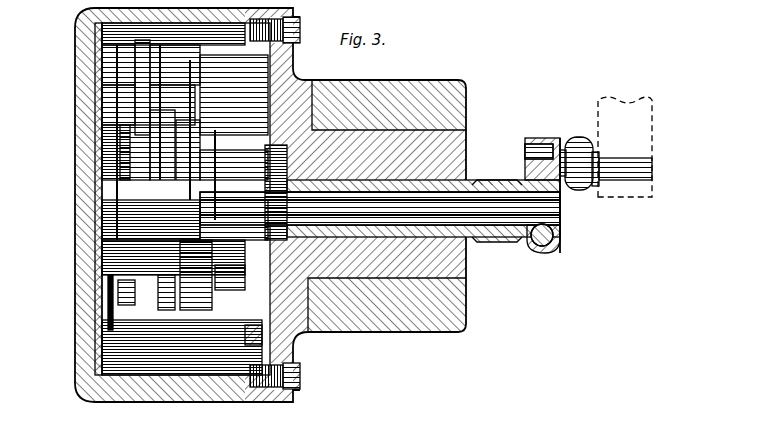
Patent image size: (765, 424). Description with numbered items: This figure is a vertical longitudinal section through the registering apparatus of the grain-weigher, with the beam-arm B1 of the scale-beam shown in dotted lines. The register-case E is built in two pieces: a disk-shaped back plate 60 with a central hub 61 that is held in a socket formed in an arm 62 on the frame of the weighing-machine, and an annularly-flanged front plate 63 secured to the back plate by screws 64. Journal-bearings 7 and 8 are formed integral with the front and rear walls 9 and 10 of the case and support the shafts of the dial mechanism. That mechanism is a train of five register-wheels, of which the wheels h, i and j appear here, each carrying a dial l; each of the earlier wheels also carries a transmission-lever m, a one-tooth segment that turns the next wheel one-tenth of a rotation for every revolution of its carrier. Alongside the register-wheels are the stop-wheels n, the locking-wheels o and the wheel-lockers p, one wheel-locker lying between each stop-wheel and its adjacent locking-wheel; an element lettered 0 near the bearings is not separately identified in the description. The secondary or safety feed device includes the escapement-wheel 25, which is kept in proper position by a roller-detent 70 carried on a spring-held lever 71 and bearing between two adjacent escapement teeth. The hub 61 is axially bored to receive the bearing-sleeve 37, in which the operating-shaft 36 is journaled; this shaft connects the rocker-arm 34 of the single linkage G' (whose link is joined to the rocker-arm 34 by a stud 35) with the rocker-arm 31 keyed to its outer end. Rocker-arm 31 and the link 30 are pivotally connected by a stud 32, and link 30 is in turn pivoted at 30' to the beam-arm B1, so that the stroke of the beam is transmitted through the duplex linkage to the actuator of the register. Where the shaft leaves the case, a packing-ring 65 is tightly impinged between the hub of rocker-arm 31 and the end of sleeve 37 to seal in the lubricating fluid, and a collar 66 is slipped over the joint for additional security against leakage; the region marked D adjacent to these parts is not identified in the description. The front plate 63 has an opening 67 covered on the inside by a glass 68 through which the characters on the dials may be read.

The front plate 63 is at (82, 330).
The back plate 60 is at (293, 76).
The central hub 61 is at (406, 128).
The arm 62 is at (466, 116).
The screws 64 is at (300, 30).
The bearing-sleeve 37 is at (455, 178).
The packing-ring 65 is at (490, 240).
The gap D is at (490, 165).
The stud 35 is at (255, 194).
The rocker-arm 34 is at (276, 226).
The rocker-arm 31 is at (540, 138).
The stud 32 is at (525, 151).
The operating-shaft 36 is at (548, 212).
The collar 66 is at (512, 242).
The single linkage G' is at (574, 208).
The link 30 is at (588, 159).
The pivotal connection 30' is at (622, 166).
The beam-arm B1 is at (652, 110).
The front wall 9 is at (100, 66).
The register-case E is at (60, 95).
The journal-bearings 7 is at (100, 100).
The opening 67 is at (96, 152).
The glass 68 is at (100, 188).
The dial l is at (97, 187).
The register-wheel h is at (145, 87).
The transmission-lever m is at (151, 85).
The journal-bearings 8 is at (250, 160).
The part 0 is at (215, 141).
The stop-wheels n is at (177, 220).
The register-wheel i is at (150, 189).
The locking-wheels o is at (162, 151).
The wheel-lockers p is at (170, 210).
The roller-detent 70 is at (205, 214).
The register-wheel j is at (126, 292).
The escapement-wheel 25 is at (196, 310).
The lever 71 is at (214, 288).
The rear wall 10 is at (270, 309).